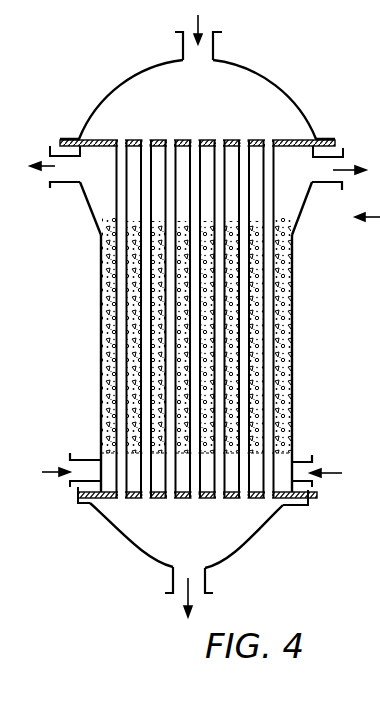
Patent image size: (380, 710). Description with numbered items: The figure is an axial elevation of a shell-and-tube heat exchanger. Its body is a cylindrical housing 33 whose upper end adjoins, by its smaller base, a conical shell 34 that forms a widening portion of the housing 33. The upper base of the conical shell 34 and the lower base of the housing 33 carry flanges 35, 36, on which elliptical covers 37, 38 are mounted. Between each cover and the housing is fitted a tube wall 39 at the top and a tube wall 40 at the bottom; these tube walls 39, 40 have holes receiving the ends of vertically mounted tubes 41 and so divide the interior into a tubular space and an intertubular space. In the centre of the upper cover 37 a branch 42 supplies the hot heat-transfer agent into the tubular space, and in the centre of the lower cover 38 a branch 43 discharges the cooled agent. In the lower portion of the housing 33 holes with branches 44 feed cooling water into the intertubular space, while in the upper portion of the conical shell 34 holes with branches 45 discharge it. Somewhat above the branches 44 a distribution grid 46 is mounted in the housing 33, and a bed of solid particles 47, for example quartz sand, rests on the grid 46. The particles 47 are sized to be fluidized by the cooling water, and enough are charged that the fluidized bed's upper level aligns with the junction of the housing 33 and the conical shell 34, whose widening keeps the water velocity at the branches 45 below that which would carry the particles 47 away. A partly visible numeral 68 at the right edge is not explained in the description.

The cylindrical housing 33 is at (292, 382).
The conical shell 34 is at (297, 220).
The flange 35 is at (340, 148).
The flange 36 is at (303, 493).
The elliptical cover 37 is at (268, 80).
The elliptical cover 38 is at (253, 552).
The tube wall 39 is at (318, 138).
The tube wall 40 is at (287, 516).
The tubes 41 is at (266, 428).
The branch 42 is at (183, 48).
The branch 43 is at (173, 580).
The branches 44 is at (70, 455).
The branches 45 is at (62, 186).
The distribution grid 46 is at (88, 438).
The solid particles 47 is at (101, 375).
The conduit 68 is at (373, 277).